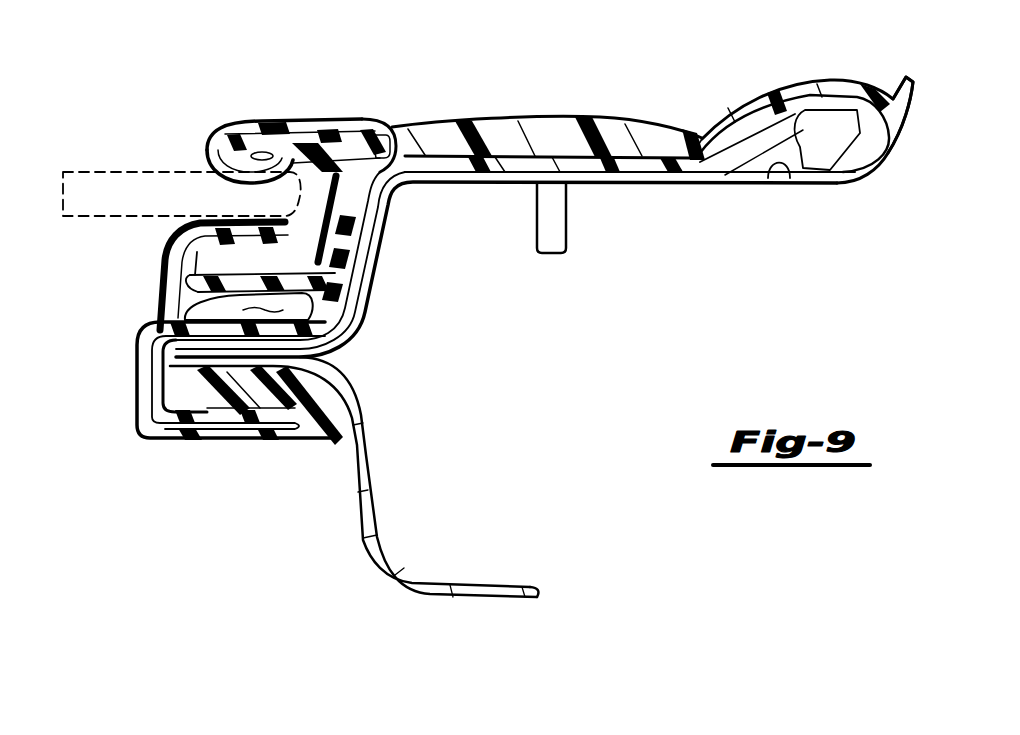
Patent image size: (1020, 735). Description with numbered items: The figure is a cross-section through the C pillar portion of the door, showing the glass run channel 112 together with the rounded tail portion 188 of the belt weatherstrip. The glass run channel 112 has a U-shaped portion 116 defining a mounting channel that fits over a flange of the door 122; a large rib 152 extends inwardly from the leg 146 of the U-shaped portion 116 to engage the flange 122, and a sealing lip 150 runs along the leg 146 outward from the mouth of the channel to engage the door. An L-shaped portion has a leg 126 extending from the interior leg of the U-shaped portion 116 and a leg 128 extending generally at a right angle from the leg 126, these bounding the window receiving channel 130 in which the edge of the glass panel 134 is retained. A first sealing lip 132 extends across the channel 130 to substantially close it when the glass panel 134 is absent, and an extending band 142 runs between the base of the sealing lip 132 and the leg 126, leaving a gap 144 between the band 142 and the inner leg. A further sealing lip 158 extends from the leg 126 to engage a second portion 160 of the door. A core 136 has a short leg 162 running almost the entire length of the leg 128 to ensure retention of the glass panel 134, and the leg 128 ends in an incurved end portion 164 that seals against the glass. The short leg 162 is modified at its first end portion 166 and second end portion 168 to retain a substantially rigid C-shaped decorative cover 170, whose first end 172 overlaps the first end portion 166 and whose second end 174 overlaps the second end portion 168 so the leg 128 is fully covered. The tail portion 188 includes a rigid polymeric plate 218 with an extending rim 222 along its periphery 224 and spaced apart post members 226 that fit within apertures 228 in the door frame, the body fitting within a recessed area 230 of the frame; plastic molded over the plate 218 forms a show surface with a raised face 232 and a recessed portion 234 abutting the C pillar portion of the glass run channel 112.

The glass run channel 112 is at (128, 428).
The U-shaped portion 116 is at (178, 430).
The door flange 122 is at (137, 382).
The leg 126 is at (385, 228).
The leg 128 is at (320, 150).
The window receiving channel 130 is at (307, 262).
The first sealing lip 132 is at (287, 213).
The glass panel 134 is at (163, 216).
The core 136 is at (389, 205).
The extending band 142 is at (153, 345).
The gap 144 is at (157, 313).
The leg 146 is at (247, 438).
The sealing lip 150 is at (333, 450).
The large rib 152 is at (313, 400).
The sealing lip 158 is at (358, 317).
The second portion of the door 160 is at (377, 260).
The short leg of core 162 is at (347, 135).
The incurved end portion 164 is at (270, 156).
The first end portion 166 is at (383, 125).
The second end portion 168 is at (213, 133).
The C-shaped decorative cover 170 is at (231, 127).
The first end of decorative cover 172 is at (390, 127).
The second end of decorative cover 174 is at (207, 160).
The rounded tail portion 188 is at (674, 102).
The rigid polymeric plate 218 is at (702, 164).
The extending rim 222 is at (855, 150).
The periphery 224 is at (893, 146).
The post members 226 is at (560, 223).
The apertures 228 is at (523, 177).
The recessed area 230 is at (783, 162).
The raised face 232 is at (840, 93).
The recessed portion 234 is at (511, 120).